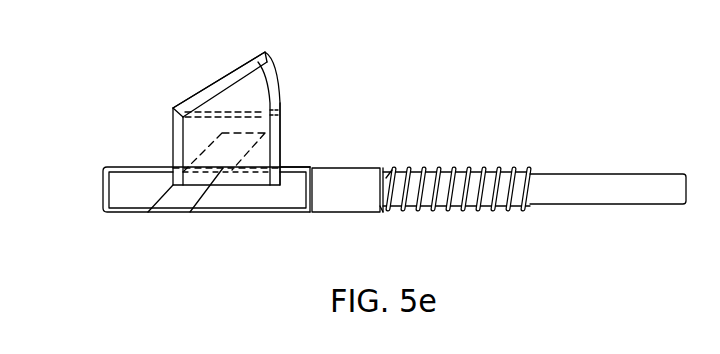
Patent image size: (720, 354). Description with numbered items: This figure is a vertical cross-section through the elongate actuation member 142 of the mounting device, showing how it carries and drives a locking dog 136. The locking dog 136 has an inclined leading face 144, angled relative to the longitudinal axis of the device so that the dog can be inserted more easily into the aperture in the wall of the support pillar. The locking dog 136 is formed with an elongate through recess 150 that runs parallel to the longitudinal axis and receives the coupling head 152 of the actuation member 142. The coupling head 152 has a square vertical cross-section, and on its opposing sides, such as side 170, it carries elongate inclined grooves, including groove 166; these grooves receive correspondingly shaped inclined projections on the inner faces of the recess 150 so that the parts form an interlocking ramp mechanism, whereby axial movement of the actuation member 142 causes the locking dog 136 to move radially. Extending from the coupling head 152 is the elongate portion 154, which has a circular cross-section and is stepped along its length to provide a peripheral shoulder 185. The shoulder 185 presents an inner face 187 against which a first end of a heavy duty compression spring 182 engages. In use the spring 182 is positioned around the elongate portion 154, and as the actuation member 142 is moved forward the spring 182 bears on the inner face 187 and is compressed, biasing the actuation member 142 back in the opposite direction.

The actuation member 142 is at (394, 149).
The leading face 144 is at (259, 104).
The locking dog 136 is at (258, 83).
The elongate through recess 150 is at (262, 120).
The coupling head 152 is at (233, 202).
The inclined groove 166 is at (168, 203).
The side of the coupling head 170 is at (277, 203).
The inner face 187 is at (391, 169).
The peripheral shoulder 185 is at (383, 211).
The heavy duty compression spring 182 is at (476, 204).
The elongate portion 154 is at (578, 192).